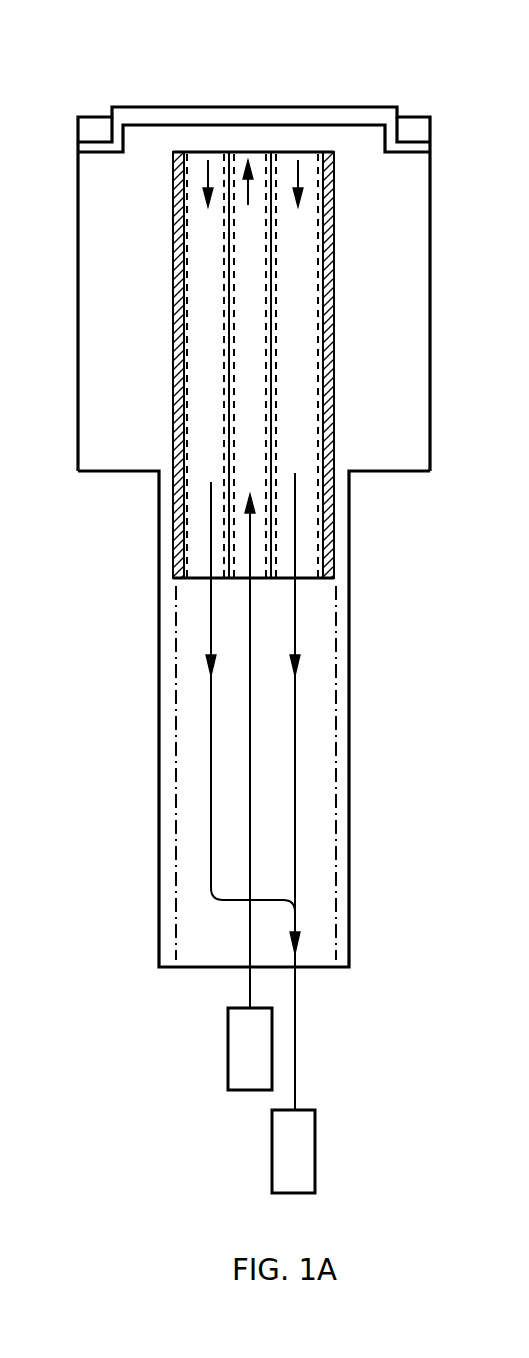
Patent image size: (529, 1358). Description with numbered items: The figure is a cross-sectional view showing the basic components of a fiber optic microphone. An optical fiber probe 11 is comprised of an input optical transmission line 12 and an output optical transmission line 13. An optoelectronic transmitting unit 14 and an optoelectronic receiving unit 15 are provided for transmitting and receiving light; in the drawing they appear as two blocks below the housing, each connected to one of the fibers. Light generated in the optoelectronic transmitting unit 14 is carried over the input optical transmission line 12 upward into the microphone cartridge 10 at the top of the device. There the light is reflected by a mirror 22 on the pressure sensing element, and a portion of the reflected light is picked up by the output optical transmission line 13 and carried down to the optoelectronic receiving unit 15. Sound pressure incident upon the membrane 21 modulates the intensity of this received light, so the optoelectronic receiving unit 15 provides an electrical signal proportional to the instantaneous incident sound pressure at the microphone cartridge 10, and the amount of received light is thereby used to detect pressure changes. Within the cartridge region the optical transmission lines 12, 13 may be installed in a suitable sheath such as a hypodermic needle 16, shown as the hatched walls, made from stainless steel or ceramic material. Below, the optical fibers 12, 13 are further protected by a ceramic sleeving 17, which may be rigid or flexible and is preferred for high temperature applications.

The microphone cartridge 10 is at (480, 248).
The optical fiber probe 11 is at (352, 335).
The input optical transmission line 12 is at (250, 723).
The output optical transmission line 13 is at (296, 1012).
The optoelectronic transmitting unit 14 is at (228, 1047).
The optoelectronic receiving unit 15 is at (270, 1155).
The hypodermic needle 16 is at (172, 283).
The ceramic sleeving 17 is at (158, 868).
The membrane 21 is at (192, 118).
The mirror 22 is at (290, 122).